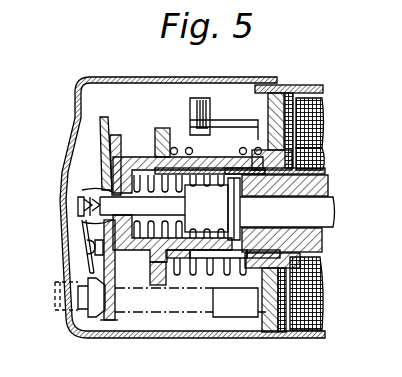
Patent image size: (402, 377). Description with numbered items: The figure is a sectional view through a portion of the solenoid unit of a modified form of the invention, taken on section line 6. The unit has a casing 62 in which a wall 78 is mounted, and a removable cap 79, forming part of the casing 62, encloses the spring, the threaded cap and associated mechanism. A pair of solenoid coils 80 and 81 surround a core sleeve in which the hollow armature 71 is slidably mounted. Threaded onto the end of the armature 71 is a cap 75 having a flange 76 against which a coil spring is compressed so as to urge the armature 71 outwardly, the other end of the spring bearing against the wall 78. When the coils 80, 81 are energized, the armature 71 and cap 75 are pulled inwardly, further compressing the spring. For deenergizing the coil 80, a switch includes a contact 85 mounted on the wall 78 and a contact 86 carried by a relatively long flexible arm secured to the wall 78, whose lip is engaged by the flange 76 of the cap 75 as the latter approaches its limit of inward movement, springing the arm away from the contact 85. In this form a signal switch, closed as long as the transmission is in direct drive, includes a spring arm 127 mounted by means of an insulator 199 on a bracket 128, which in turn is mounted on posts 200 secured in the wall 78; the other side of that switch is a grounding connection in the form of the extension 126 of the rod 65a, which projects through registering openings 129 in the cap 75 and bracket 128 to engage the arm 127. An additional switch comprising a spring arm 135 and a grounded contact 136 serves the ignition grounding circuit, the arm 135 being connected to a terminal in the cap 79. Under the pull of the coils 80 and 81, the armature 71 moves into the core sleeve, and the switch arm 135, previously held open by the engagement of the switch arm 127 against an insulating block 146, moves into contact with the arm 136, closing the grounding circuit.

The section line 6- 6 is at (86, 56).
The insulator 199 is at (107, 116).
The removable cap 79 is at (261, 84).
The casing 62 is at (311, 85).
The solenoid coil 80 is at (321, 123).
The solenoid coil 81 is at (323, 158).
The contact 86 is at (210, 97).
The contact 85 is at (199, 112).
The cap 75 is at (138, 156).
The flange 76 is at (163, 128).
The rod 65a is at (328, 208).
The armature 71 is at (315, 243).
The wall 78 is at (278, 337).
The posts 200 is at (205, 312).
The bracket 128 is at (113, 320).
The spring arm 127 is at (99, 162).
The registering openings 129 is at (100, 180).
The insulating block 146 is at (88, 197).
The extension 126 is at (88, 222).
The spring arm 135 is at (84, 243).
The contact 136 is at (95, 250).